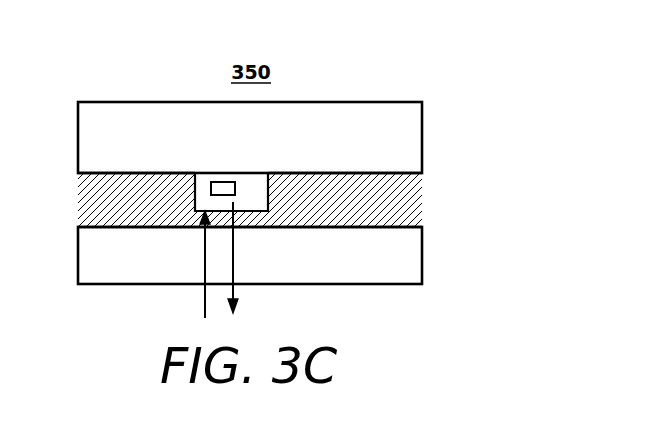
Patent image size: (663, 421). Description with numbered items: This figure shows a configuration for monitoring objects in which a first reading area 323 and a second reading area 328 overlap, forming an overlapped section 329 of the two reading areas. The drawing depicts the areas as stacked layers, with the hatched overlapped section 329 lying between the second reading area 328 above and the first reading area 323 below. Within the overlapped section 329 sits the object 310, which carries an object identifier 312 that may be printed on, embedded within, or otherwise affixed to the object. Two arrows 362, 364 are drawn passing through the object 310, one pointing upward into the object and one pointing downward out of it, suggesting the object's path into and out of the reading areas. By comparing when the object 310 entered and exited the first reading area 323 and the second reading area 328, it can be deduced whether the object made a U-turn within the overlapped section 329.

The second reading area 328 is at (422, 133).
The overlapped section 329 is at (422, 190).
The first reading area 323 is at (422, 253).
The object 310 is at (280, 178).
The object identifier 312 is at (211, 186).
The incoming signal 362 is at (205, 293).
The outgoing signal 364 is at (240, 292).